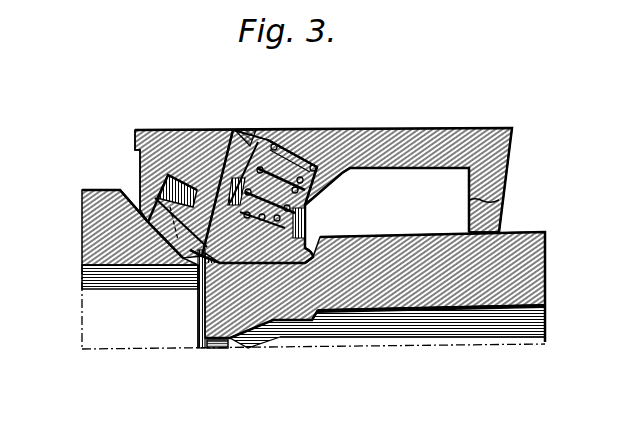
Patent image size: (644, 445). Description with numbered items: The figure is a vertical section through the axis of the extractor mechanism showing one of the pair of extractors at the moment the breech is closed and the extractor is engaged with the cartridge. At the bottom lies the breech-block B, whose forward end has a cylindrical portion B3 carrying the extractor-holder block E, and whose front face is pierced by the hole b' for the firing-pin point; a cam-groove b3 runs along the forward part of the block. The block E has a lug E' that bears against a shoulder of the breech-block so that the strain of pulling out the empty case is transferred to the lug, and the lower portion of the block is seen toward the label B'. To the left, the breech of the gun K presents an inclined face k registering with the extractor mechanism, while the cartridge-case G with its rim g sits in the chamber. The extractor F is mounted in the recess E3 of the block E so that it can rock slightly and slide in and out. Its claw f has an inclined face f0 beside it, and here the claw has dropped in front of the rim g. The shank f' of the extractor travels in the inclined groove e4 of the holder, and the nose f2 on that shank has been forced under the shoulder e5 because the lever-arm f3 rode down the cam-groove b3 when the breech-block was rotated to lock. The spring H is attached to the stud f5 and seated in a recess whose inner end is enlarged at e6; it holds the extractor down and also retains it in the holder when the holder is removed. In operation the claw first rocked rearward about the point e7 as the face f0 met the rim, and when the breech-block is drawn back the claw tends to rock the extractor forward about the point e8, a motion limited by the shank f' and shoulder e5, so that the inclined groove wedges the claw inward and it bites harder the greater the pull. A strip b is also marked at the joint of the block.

The extractor-holder block E is at (323, 175).
The lug E' is at (513, 199).
The recess E3 is at (167, 173).
The joint strip b is at (514, 205).
The spring H is at (330, 180).
The breech of the gun K is at (93, 205).
The inclined face k is at (132, 196).
The point e8 is at (155, 230).
The extractor F is at (210, 222).
The shank f' is at (225, 135).
The nose or lug f2 is at (250, 140).
The lever-arm f3 is at (362, 213).
The stud f5 is at (325, 137).
The inclined groove e4 is at (272, 143).
The shoulder or notch e5 is at (265, 168).
The enlarged recess end e6 is at (298, 178).
The point e7 is at (314, 165).
The inclined face f0 is at (140, 262).
The cartridge-case G is at (313, 307).
The claw f is at (182, 284).
The rim g is at (202, 338).
The breech-block B is at (390, 287).
The cam-groove b3 is at (318, 236).
The cylindrical portion B3 is at (247, 310).
The lower plate edge B' is at (412, 356).
The hole b' is at (217, 363).